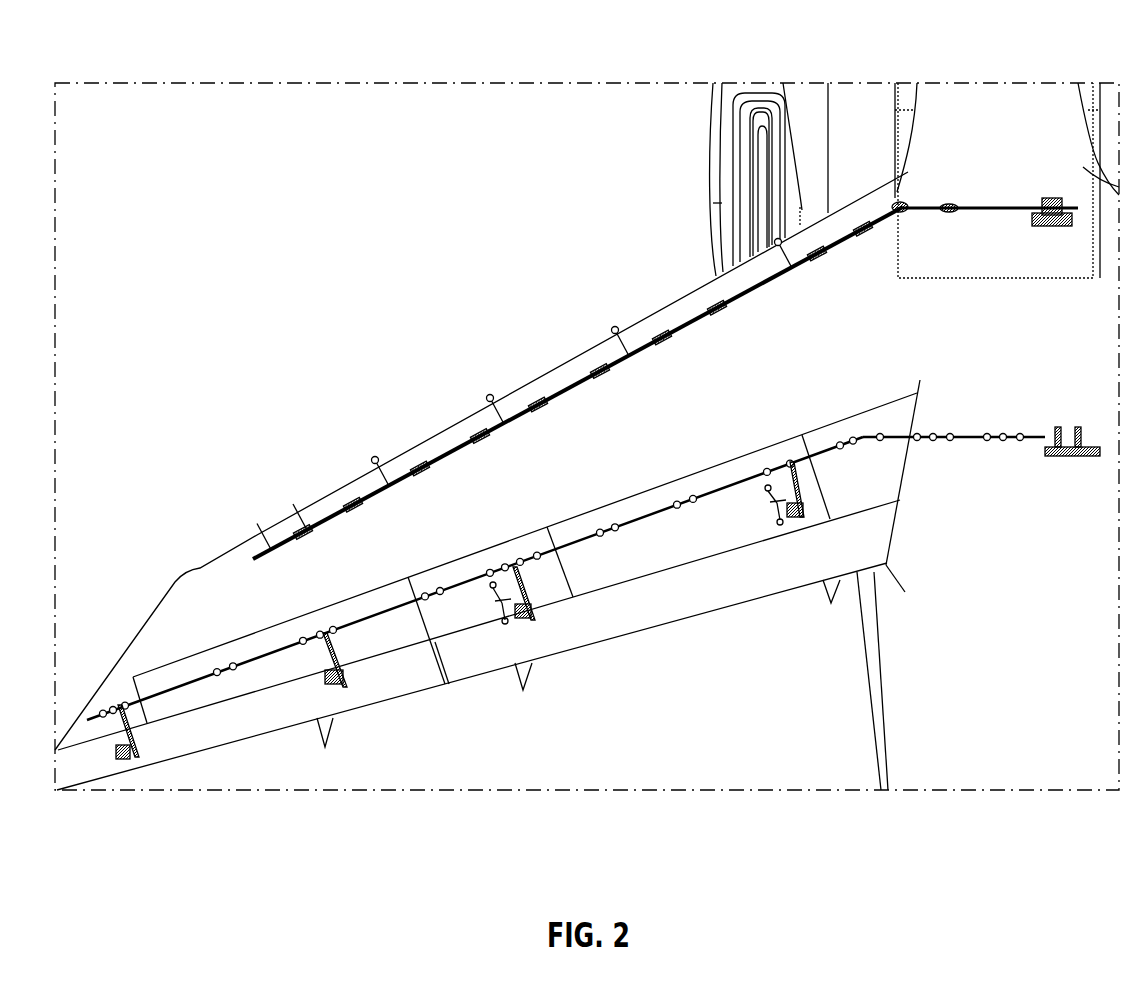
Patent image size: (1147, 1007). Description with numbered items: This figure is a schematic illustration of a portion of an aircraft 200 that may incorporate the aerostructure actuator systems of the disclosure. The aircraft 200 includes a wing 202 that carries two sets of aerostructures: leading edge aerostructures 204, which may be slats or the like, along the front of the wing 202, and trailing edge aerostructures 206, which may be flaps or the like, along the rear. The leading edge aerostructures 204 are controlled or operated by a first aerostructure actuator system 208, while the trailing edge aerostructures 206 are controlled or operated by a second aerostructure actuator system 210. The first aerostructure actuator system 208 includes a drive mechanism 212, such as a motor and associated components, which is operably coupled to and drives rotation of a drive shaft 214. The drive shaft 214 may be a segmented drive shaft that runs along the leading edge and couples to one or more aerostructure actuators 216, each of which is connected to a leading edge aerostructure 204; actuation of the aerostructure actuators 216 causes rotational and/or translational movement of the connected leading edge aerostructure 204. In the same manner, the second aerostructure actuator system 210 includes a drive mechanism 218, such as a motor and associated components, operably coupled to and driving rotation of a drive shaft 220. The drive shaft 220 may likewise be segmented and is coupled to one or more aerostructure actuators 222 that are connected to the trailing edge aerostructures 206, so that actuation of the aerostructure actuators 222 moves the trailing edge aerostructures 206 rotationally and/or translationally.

The aircraft 200 is at (343, 188).
The wing 202 is at (198, 582).
The leading edge aerostructures 204 is at (837, 232).
The trailing edge aerostructures 206 is at (250, 727).
The first aerostructure actuator system 208 is at (1066, 264).
The second aerostructure actuator system 210 is at (1071, 405).
The drive mechanism 212 is at (1052, 198).
The drive shaft 214 is at (923, 210).
The aerostructure actuators 216 is at (866, 225).
The drive mechanism 218 is at (1058, 463).
The drive shaft 220 is at (728, 483).
The aerostructure actuators 222 is at (123, 765).